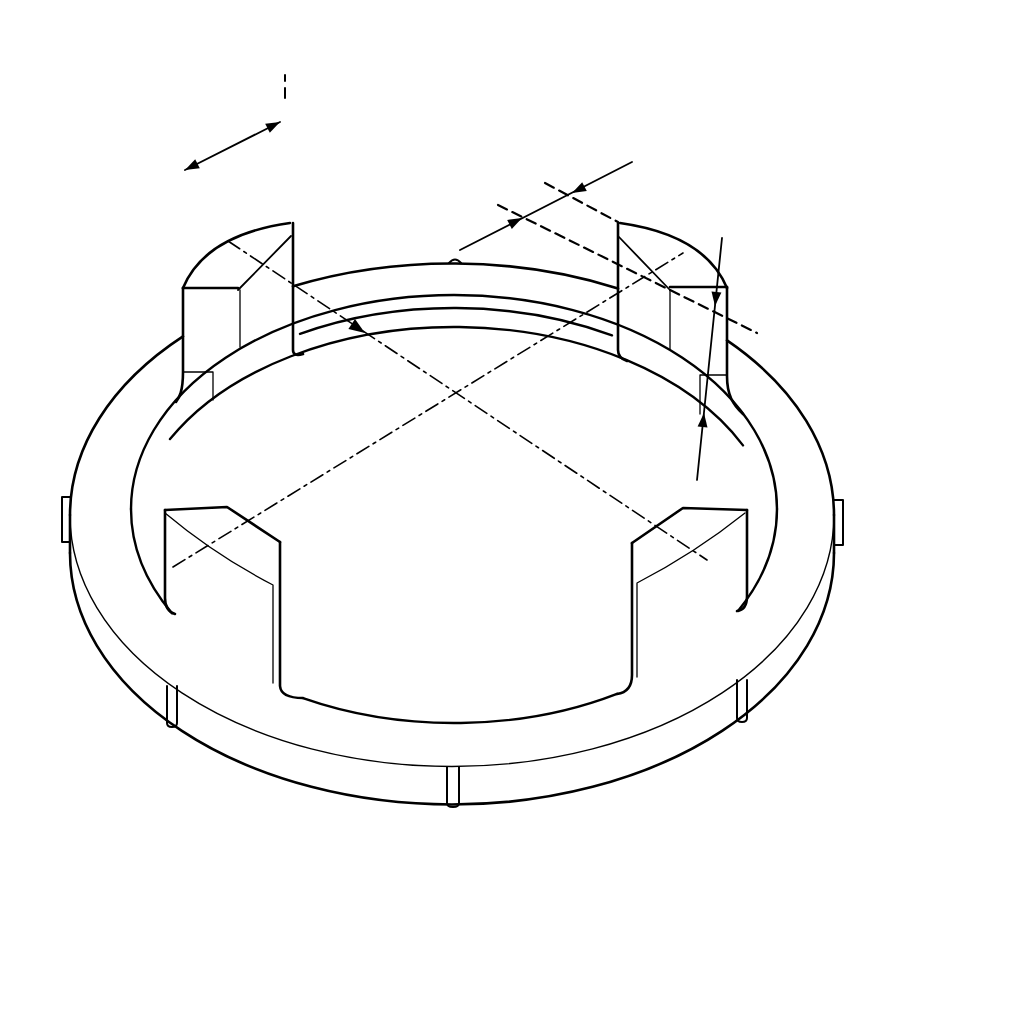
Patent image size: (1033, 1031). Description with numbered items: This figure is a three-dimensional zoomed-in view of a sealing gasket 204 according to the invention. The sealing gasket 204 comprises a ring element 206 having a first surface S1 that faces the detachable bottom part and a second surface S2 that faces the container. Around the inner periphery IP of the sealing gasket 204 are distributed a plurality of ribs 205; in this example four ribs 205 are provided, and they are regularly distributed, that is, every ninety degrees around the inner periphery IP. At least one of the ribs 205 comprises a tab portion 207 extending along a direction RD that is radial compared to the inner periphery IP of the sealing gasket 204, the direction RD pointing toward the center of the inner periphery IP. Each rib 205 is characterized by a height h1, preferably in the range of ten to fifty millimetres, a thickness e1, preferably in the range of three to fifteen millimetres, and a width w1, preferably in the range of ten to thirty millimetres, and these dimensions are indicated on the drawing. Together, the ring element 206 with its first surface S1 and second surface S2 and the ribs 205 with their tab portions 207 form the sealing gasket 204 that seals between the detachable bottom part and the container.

The sealing gasket 204 is at (173, 62).
The rib 205 is at (183, 320).
The ring element 206 is at (263, 713).
The tab portion 207 is at (284, 272).
The radial direction RD is at (440, 321).
The inner periphery IP is at (350, 712).
The first surface S1 is at (515, 805).
The second surface S2 is at (518, 738).
The width w1 is at (232, 142).
The height h1 is at (726, 359).
The thickness e1 is at (608, 239).